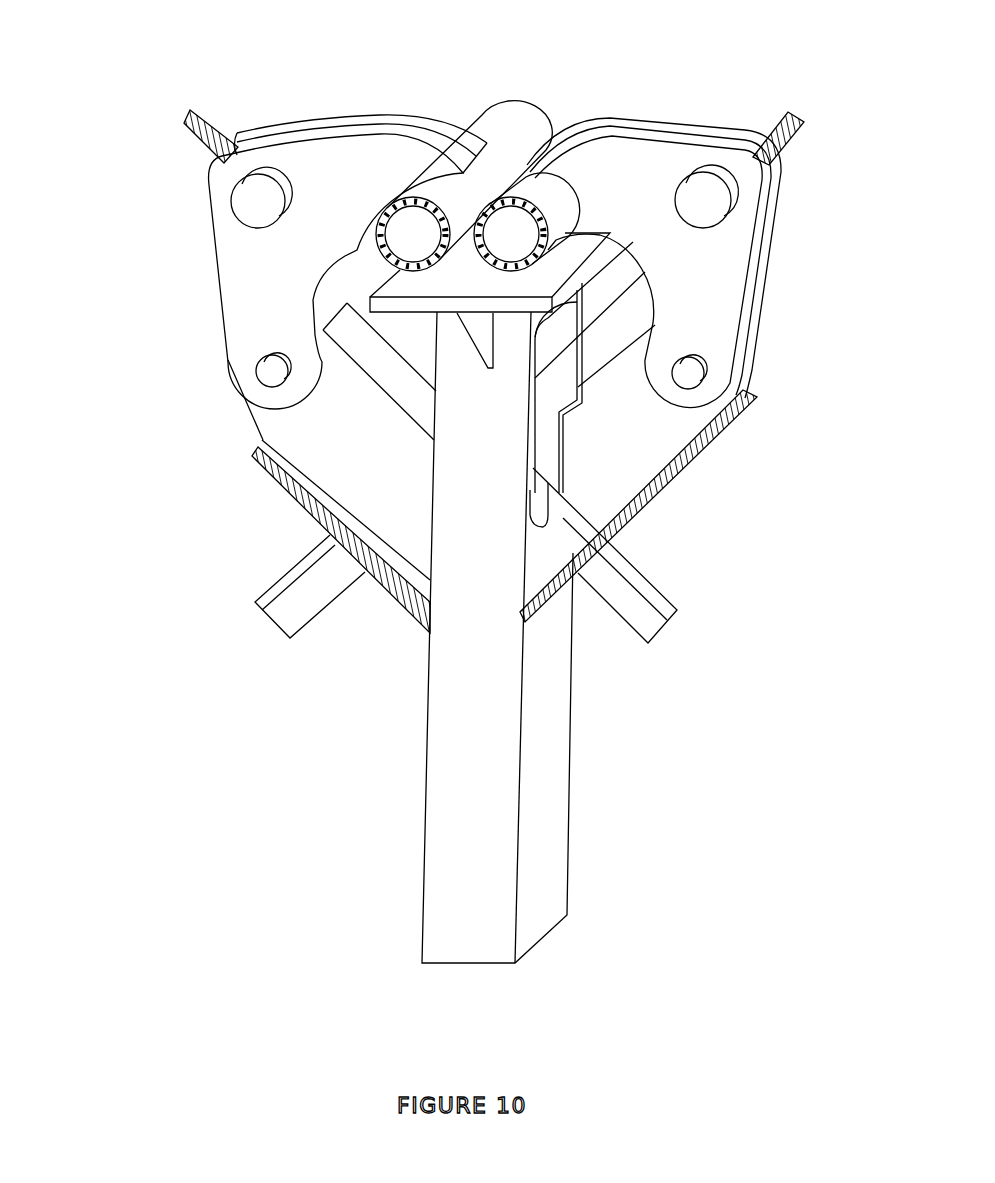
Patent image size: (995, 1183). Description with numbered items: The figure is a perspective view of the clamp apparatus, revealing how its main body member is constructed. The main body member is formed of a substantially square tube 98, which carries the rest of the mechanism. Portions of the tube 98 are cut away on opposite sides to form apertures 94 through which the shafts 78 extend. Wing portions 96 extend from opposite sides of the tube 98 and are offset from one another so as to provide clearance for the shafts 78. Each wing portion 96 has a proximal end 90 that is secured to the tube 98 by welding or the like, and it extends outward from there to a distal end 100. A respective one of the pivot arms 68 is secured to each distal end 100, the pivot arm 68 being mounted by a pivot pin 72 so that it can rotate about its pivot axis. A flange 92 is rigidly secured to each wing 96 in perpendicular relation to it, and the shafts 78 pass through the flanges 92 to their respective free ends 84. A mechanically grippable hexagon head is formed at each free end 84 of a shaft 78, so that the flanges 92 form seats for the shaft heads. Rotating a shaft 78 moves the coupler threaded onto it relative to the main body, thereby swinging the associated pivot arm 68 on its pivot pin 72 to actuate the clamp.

The pivot arm 68 is at (305, 140).
The pivot pin 72 is at (268, 372).
The shaft 78 is at (607, 297).
The free end 84 is at (273, 610).
The proximal end 90 is at (427, 518).
The flange 92 is at (273, 473).
The aperture 94 is at (542, 428).
The wing portion 96 is at (313, 433).
The square tube 98 is at (545, 750).
The distal end 100 is at (230, 393).